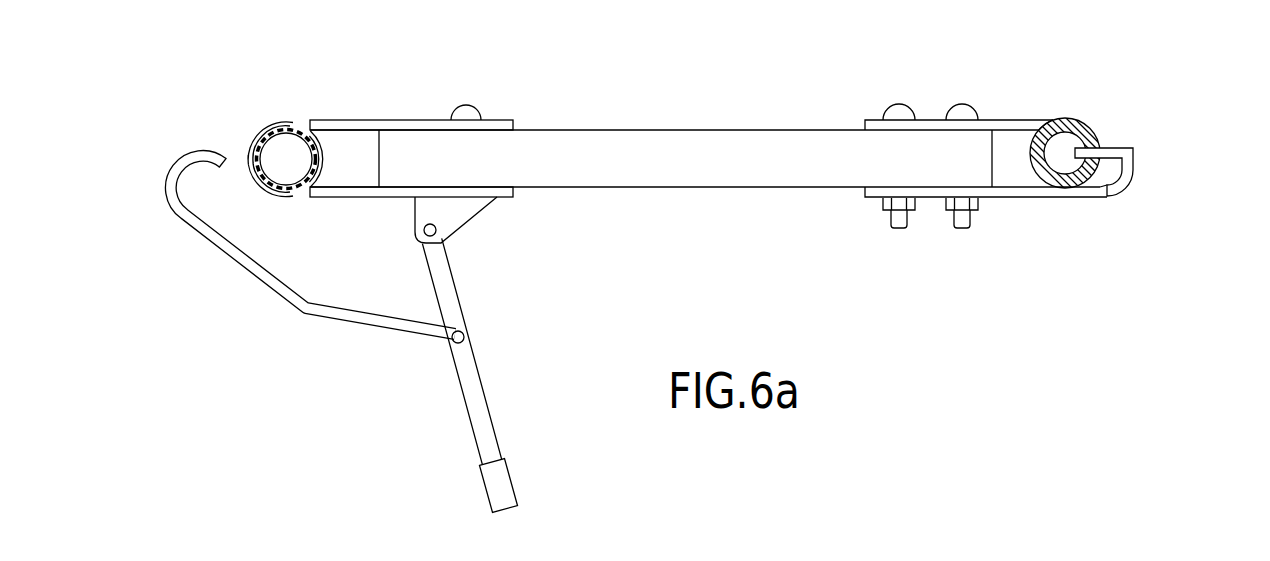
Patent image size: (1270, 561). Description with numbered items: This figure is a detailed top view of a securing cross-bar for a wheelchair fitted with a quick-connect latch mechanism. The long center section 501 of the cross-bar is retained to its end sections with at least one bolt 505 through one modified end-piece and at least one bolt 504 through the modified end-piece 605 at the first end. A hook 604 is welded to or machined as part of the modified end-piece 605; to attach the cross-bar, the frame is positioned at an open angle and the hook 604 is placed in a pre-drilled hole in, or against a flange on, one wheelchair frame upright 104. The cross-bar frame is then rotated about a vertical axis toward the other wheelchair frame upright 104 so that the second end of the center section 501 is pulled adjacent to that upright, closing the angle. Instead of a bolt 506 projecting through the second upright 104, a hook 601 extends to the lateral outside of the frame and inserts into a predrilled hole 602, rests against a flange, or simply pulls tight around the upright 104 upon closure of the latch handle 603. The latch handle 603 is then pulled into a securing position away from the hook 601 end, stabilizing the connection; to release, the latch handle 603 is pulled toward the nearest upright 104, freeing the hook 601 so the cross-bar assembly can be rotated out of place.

The wheelchair frame upright 104 is at (277, 125).
The long center section 501 is at (600, 188).
The bolt 504 is at (975, 103).
The bolt 505 is at (467, 110).
The bolt 506 is at (520, 120).
The hook 601 is at (230, 268).
The predrilled hole 602 is at (252, 158).
The latch handle 603 is at (510, 477).
The hook 604 is at (1123, 147).
The modified end-piece 605 is at (1013, 118).